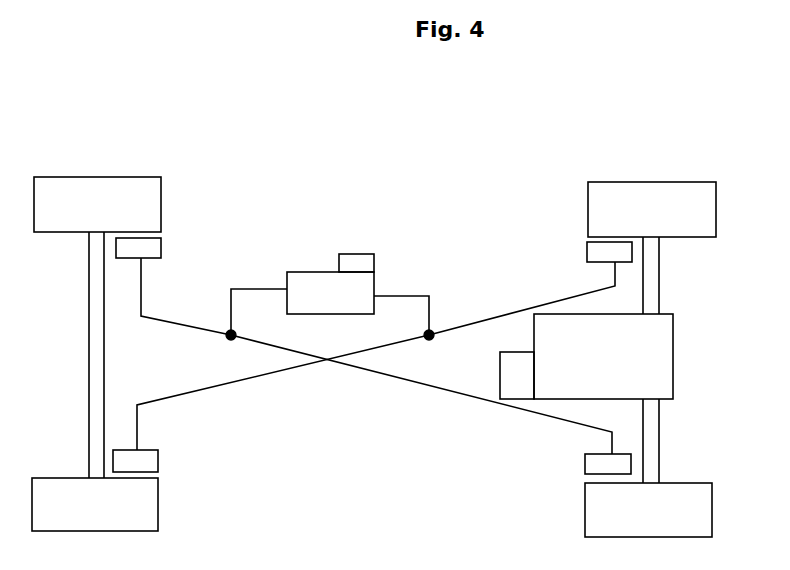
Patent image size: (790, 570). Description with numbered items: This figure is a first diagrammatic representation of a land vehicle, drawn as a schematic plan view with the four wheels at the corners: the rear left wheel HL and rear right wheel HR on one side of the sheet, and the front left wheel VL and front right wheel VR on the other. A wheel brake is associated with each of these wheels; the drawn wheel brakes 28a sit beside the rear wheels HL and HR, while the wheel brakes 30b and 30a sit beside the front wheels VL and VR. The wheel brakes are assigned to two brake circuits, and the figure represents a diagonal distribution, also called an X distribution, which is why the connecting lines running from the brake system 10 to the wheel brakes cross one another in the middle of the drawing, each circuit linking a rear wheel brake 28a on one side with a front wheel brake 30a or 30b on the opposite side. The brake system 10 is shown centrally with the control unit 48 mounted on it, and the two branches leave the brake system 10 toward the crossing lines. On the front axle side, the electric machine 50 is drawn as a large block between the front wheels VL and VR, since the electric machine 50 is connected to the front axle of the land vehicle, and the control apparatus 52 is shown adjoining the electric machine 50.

The brake system 10 is at (308, 266).
The control unit 48 is at (363, 251).
The wheel brake 28a is at (167, 248).
The wheel brake 30a is at (575, 466).
The wheel brake 30b is at (575, 256).
The electric machine 50 is at (490, 382).
The control apparatus 52 is at (527, 333).
The rear left wheel HL is at (172, 205).
The rear right wheel HR is at (166, 508).
The front left wheel VL is at (575, 208).
The front right wheel VR is at (574, 513).